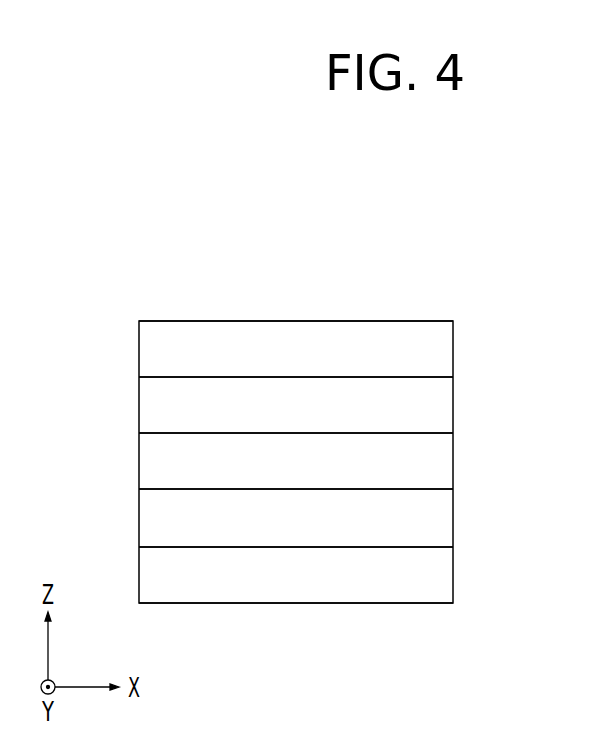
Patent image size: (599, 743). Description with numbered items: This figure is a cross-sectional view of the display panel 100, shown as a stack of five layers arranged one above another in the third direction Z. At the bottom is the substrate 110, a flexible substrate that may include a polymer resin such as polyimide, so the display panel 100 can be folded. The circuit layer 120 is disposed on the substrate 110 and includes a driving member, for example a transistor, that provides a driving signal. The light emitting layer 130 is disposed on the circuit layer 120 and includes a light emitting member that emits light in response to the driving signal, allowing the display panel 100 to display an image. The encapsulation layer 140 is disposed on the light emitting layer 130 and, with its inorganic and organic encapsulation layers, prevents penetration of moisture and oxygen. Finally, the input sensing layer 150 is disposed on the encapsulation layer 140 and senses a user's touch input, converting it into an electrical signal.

The display panel 100 is at (413, 240).
The substrate 110 is at (442, 581).
The circuit layer 120 is at (442, 525).
The light emitting layer 130 is at (442, 467).
The encapsulation layer 140 is at (442, 411).
The input sensing layer 150 is at (442, 354).